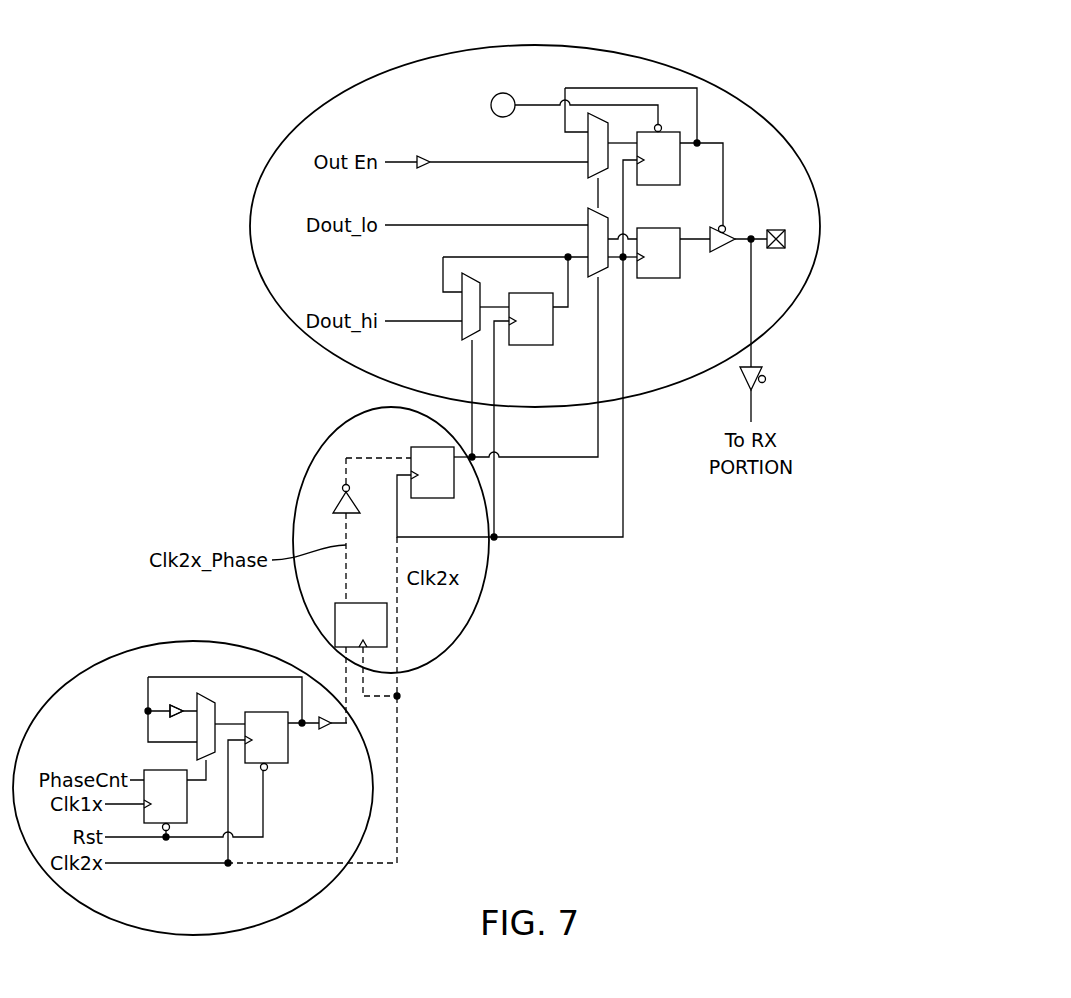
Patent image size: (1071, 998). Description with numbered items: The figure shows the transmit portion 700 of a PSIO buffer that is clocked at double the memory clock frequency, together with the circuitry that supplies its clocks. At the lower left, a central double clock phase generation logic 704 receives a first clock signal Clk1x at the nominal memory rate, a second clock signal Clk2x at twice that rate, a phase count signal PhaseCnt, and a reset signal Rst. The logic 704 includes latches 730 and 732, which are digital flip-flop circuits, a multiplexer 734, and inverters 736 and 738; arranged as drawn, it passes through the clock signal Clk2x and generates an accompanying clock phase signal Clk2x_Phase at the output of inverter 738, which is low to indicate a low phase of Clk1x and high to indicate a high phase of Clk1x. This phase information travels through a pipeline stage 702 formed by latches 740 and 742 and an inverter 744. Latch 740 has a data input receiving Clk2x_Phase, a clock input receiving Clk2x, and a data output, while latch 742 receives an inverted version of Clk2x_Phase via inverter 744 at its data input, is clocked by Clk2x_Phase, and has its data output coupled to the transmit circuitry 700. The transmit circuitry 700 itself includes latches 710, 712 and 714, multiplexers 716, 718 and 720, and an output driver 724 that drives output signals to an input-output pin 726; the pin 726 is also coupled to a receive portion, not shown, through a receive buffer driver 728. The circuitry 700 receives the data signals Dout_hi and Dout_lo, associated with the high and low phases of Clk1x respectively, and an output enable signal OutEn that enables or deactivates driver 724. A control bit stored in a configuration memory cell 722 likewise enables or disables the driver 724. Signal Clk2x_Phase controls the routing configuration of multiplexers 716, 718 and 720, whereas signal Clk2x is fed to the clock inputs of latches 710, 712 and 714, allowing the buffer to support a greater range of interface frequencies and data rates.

The transmit portion 700 is at (650, 58).
The pipeline stage 702 is at (450, 652).
The 2x clock phase generation logic 704 is at (305, 905).
The latch 710 is at (528, 345).
The latch 712 is at (658, 278).
The latch 714 is at (658, 185).
The multiplexer 716 is at (480, 296).
The multiplexer 718 is at (588, 235).
The multiplexer 720 is at (588, 140).
The configuration memory cell 722 is at (490, 105).
The output driver 724 is at (720, 252).
The input-output pin 726 is at (778, 230).
The receive buffer driver 728 is at (755, 367).
The latch 730 is at (155, 770).
The latch 732 is at (280, 763).
The multiplexer 734 is at (215, 722).
The inverter 736 is at (148, 708).
The inverter 738 is at (327, 730).
The latch 740 is at (380, 617).
The latch 742 is at (424, 498).
The inverter 744 is at (333, 497).